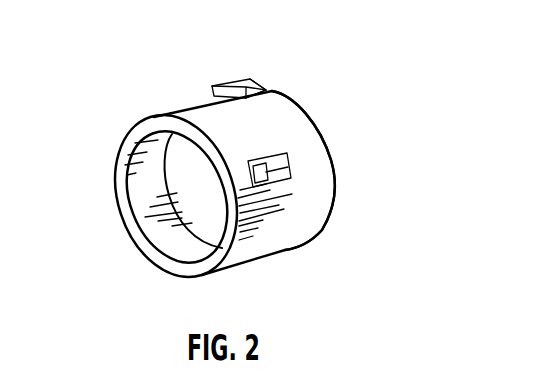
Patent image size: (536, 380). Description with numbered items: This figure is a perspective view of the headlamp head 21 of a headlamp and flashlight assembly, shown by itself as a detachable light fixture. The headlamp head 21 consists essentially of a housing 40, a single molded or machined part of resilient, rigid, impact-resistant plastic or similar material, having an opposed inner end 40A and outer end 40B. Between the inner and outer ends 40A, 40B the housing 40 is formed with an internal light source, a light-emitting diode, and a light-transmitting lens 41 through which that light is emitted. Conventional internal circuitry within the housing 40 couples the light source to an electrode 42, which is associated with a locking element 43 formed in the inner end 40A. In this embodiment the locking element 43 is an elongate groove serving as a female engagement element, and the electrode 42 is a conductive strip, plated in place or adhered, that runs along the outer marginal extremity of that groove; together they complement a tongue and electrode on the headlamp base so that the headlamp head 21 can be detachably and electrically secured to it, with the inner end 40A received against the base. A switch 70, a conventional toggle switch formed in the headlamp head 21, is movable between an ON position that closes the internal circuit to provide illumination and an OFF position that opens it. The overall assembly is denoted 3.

The sleeve assembly 3 is at (208, 115).
The headlamp head 21 is at (112, 188).
The housing 40 is at (180, 113).
The inner end 40A is at (336, 199).
The outer end 40B is at (135, 232).
The light-transmitting lens 41 is at (178, 181).
The electrode 42 is at (237, 83).
The locking element 43 is at (268, 88).
The switch 70 is at (288, 160).